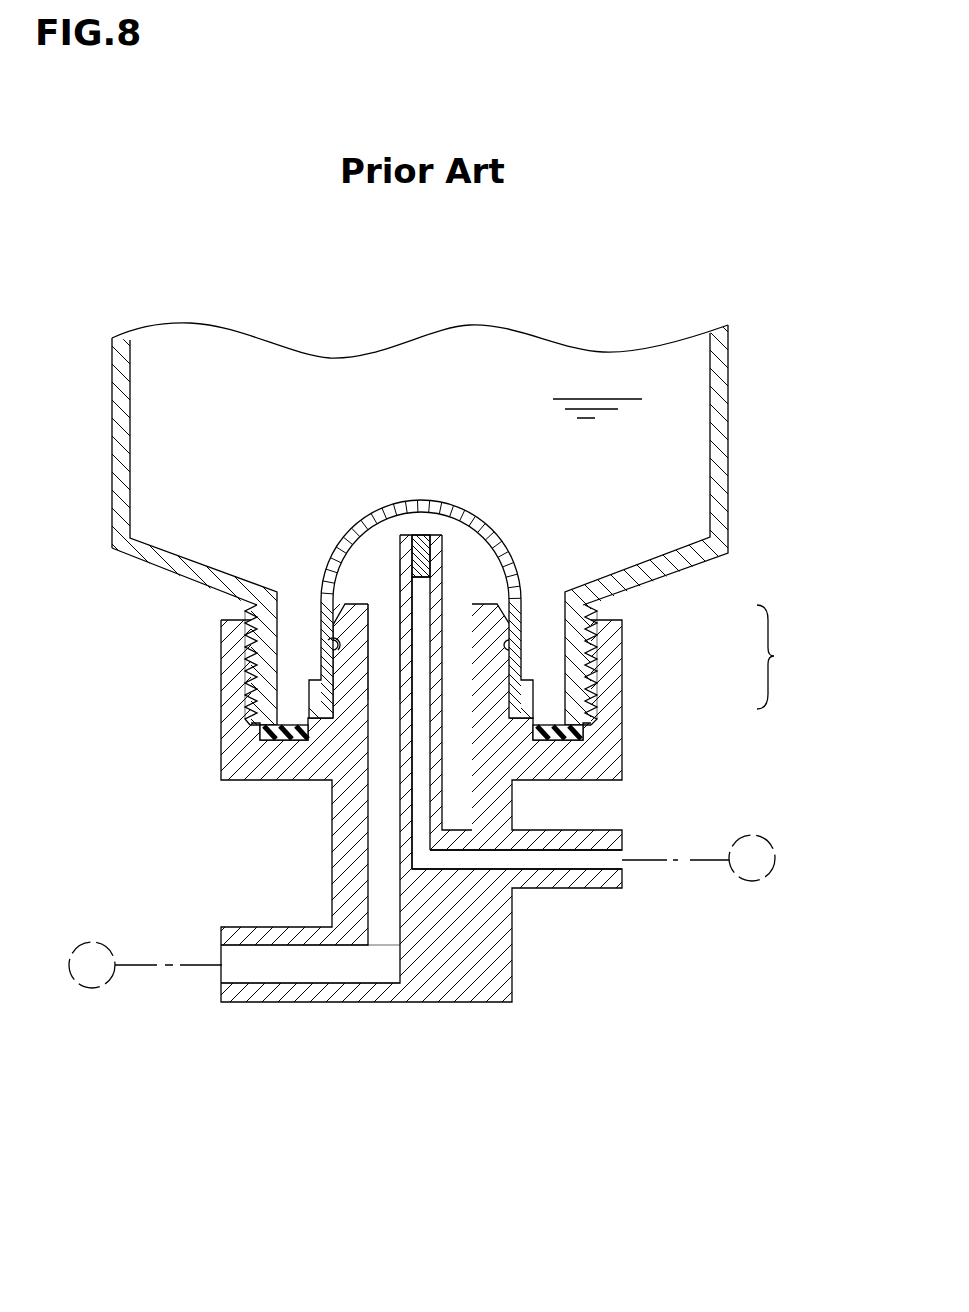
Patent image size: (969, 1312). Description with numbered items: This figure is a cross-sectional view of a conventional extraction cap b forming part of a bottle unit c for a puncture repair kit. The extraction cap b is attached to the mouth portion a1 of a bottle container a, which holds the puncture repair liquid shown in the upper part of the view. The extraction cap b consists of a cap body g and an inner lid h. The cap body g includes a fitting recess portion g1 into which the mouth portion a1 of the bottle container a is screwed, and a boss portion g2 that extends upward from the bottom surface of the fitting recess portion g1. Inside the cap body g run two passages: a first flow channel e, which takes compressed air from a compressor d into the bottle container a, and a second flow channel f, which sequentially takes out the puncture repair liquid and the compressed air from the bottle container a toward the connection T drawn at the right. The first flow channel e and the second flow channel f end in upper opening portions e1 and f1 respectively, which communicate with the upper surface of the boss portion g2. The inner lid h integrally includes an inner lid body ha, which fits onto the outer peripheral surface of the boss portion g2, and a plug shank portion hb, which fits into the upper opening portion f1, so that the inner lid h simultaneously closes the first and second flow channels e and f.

The bottle container a is at (732, 373).
The mouth portion a1 is at (278, 655).
The extraction cap b is at (774, 657).
The bottle unit c is at (742, 453).
The compressor d is at (80, 987).
The first flow channel e is at (255, 983).
The upper opening portion e1 is at (385, 598).
The second flow channel f is at (563, 860).
The upper opening portion f1 is at (418, 530).
The cap body g is at (632, 690).
The fitting recess portion g1 is at (253, 710).
The boss portion g2 is at (353, 638).
The inner lid h is at (505, 528).
The inner lid body ha is at (330, 638).
The plug shank portion hb is at (422, 563).
The tank connection T is at (763, 880).